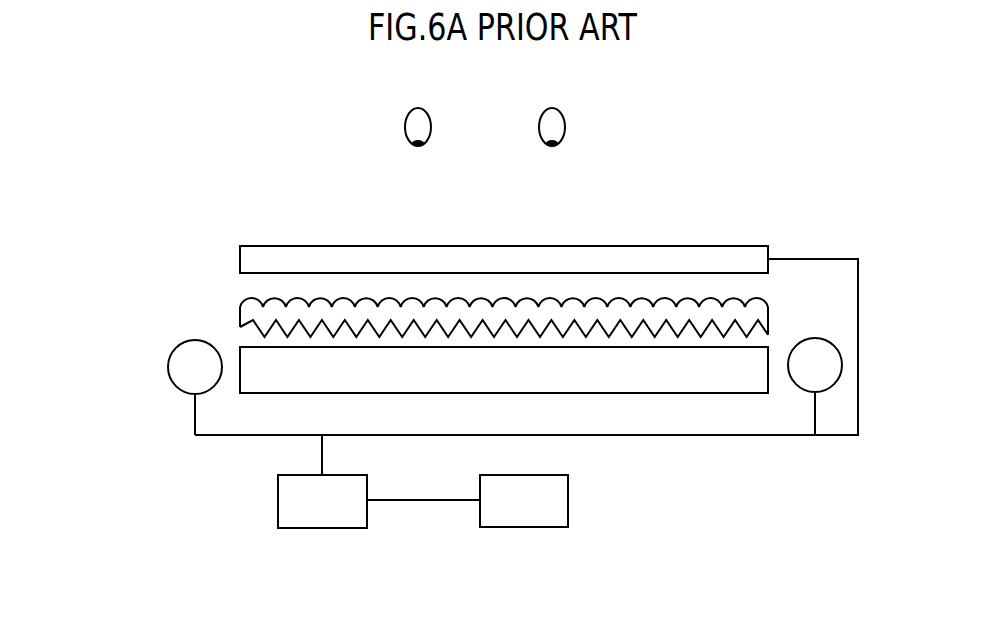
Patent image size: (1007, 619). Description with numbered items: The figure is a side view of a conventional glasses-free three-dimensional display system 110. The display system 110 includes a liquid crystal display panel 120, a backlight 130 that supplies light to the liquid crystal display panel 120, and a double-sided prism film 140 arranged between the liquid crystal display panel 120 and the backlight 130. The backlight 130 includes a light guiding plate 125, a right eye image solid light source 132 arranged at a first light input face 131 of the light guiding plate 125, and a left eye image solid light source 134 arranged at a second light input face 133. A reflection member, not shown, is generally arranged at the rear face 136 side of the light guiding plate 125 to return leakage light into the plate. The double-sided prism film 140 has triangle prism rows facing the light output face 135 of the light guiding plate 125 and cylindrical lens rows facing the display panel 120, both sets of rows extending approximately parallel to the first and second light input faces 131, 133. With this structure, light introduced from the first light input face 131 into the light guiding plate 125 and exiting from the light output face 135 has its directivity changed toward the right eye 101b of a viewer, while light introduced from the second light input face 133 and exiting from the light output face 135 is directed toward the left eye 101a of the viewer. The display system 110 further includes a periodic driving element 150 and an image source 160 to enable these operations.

The left eye 101a is at (410, 122).
The right eye 101b is at (560, 122).
The display system 110 is at (661, 233).
The liquid crystal display panel 120 is at (258, 255).
The light guiding plate 125 is at (440, 370).
The backlight 130 is at (219, 328).
The first light input face 131 is at (768, 373).
The right eye image solid light source 132 is at (858, 362).
The second light input face 133 is at (240, 378).
The left eye image solid light source 134 is at (178, 370).
The light output face 135 is at (758, 341).
The rear face 136 is at (632, 394).
The double-sided prism film 140 is at (250, 308).
The periodic driving element 150 is at (295, 500).
The image source 160 is at (553, 498).